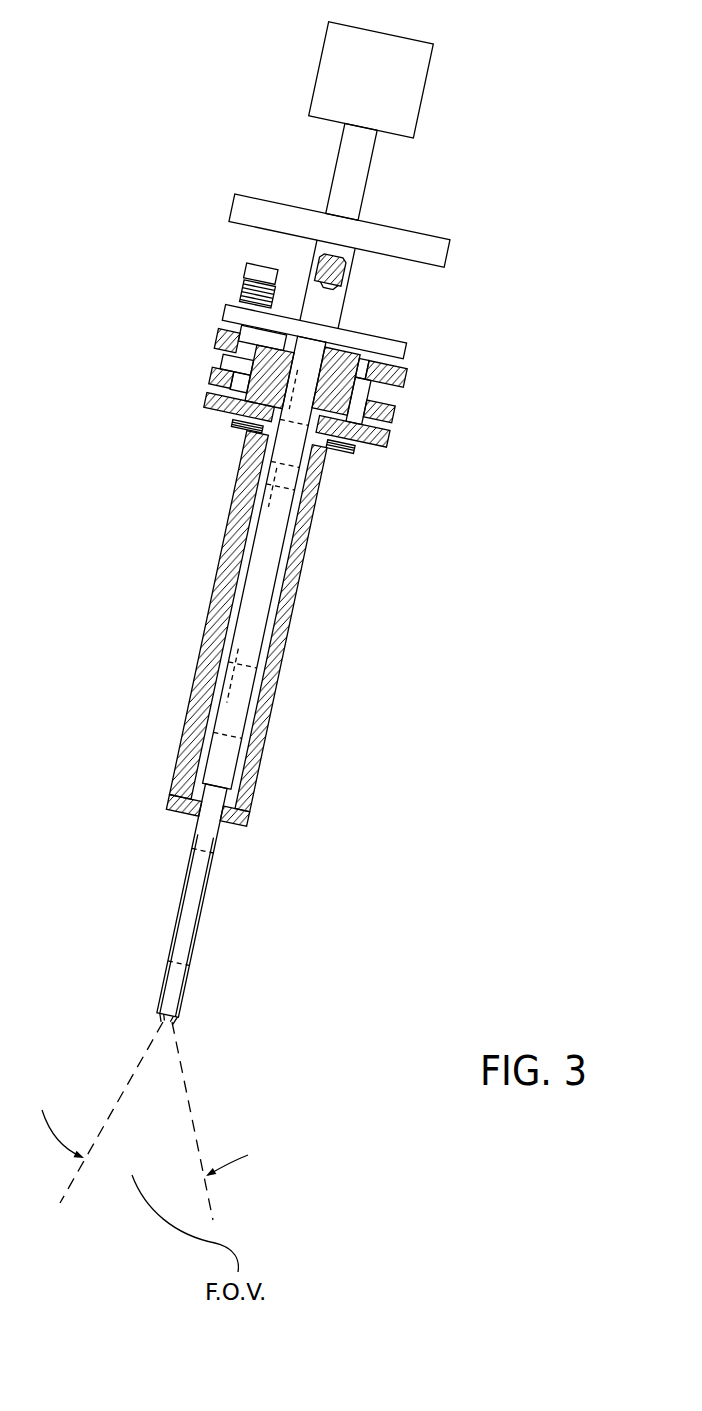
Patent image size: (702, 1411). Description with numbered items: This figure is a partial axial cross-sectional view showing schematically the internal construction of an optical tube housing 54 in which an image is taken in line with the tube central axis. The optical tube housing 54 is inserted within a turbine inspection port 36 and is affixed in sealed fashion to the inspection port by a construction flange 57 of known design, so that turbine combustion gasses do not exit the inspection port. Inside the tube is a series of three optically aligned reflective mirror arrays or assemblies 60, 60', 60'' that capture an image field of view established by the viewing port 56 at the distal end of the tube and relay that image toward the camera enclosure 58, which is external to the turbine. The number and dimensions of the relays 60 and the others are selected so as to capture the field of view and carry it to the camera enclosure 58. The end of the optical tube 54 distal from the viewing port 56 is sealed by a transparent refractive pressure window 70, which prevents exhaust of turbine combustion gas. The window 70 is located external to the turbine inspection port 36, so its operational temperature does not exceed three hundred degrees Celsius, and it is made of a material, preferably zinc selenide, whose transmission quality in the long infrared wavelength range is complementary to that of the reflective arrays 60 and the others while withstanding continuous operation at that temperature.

The camera enclosure 58 is at (447, 67).
The transparent refractive pressure window 70 is at (352, 272).
The construction flange 57 is at (401, 352).
The turbine inspection port 36 is at (388, 440).
The optical tube housing 54 is at (268, 560).
The reflective mirror array 60' is at (383, 588).
The reflective mirror array 60'' is at (170, 501).
The reflective mirror array 60 is at (313, 926).
The viewing port 56 is at (167, 1022).